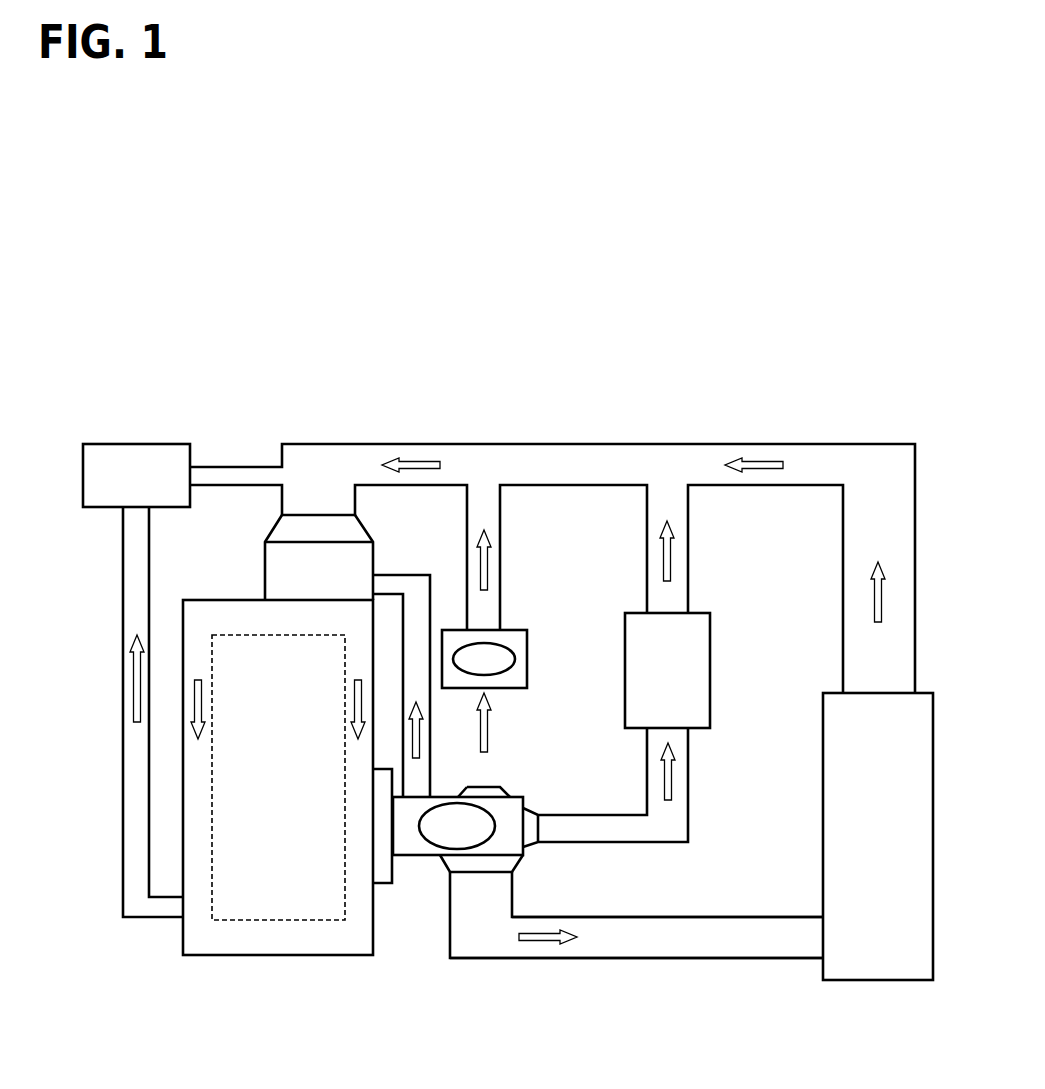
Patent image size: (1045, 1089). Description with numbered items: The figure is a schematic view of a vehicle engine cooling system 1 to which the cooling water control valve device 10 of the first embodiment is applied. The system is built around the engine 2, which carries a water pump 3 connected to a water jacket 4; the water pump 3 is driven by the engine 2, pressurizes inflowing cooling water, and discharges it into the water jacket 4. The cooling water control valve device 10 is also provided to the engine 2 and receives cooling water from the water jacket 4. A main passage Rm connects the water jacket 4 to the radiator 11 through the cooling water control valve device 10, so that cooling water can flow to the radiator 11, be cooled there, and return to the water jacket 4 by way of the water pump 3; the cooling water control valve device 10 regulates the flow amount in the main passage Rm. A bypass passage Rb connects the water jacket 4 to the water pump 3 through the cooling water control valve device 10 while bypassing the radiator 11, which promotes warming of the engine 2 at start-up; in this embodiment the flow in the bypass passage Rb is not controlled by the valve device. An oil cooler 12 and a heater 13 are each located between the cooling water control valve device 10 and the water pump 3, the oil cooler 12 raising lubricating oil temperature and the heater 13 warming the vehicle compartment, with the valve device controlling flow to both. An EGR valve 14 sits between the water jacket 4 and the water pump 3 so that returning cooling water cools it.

The engine cooling system 1 is at (540, 290).
The engine 2 is at (270, 948).
The water pump 3 is at (272, 566).
The water jacket 4 is at (358, 930).
The cooling water control valve device 10 is at (423, 852).
The radiator 11 is at (873, 970).
The oil cooler 12 is at (530, 660).
The heater 13 is at (703, 665).
The EGR valve 14 is at (140, 452).
The bypass passage Rb is at (416, 580).
The main passage Rm is at (614, 943).